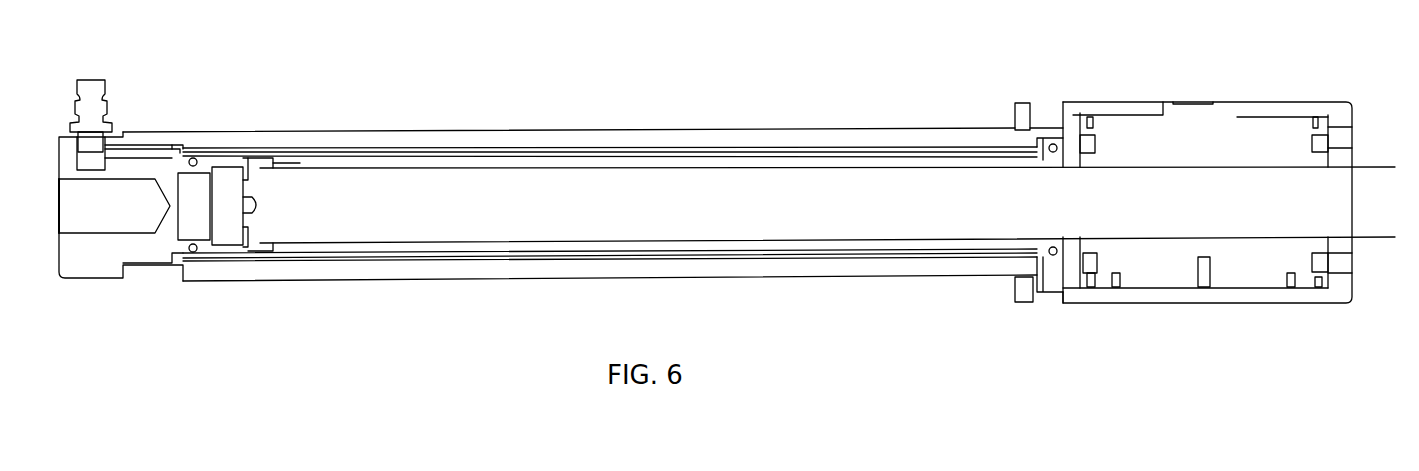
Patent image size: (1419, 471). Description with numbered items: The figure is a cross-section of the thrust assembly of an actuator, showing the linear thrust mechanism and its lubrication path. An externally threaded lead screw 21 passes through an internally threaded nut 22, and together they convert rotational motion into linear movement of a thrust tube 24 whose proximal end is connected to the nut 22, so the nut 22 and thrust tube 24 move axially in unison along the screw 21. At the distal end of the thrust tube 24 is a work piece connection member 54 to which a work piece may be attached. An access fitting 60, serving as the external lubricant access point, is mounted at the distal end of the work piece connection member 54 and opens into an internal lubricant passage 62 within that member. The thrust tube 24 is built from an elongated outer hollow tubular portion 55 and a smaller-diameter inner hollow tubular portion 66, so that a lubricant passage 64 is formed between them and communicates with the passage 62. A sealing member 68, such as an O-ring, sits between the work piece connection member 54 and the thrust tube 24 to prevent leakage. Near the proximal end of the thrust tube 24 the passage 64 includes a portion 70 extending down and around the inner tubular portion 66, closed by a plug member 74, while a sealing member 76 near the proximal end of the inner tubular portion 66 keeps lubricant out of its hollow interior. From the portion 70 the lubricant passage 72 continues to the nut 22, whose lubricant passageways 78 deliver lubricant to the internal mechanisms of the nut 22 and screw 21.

The lead screw 21 is at (822, 241).
The nut 22 is at (1270, 115).
The thrust tube 24 is at (352, 130).
The work piece connection member 54 is at (95, 280).
The outer hollow tubular portion 55 is at (378, 282).
The access fitting 60 is at (108, 90).
The internal lubricant passage 62 is at (118, 146).
The lubricant passage 64 is at (205, 148).
The inner hollow tubular portion 66 is at (445, 156).
The sealing member 68 is at (200, 251).
The portion of the lubricant passage 70 is at (1018, 278).
The lubricant passage 72 is at (1148, 290).
The plug member 74 is at (1042, 292).
The sealing member 76 is at (1053, 147).
The lubricant passageway 78 is at (1215, 272).